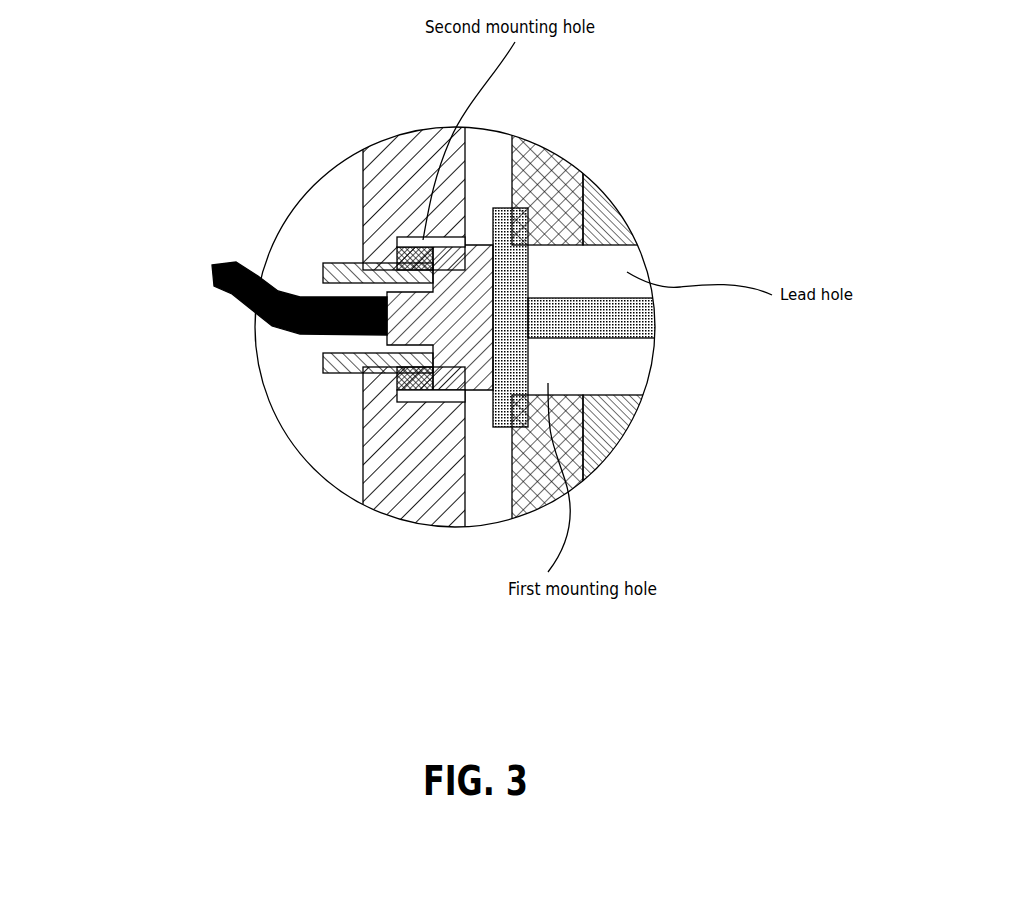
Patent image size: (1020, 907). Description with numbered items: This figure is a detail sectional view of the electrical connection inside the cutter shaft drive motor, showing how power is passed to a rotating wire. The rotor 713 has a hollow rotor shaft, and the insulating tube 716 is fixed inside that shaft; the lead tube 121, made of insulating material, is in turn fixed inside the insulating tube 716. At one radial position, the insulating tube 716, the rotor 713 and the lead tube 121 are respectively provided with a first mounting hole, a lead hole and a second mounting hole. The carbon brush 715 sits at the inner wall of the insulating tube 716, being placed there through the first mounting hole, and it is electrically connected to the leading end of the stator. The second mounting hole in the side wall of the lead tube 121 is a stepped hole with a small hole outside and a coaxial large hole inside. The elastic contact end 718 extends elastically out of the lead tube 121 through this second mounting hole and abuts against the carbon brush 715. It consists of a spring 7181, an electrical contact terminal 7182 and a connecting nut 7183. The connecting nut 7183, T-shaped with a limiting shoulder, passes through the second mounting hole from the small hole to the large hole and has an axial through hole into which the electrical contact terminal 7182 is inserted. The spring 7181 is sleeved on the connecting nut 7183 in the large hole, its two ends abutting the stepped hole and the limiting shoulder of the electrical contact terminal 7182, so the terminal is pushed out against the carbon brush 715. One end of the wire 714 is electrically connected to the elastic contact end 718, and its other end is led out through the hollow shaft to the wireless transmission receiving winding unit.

The lead tube 121 is at (420, 163).
The rotor 713 is at (623, 223).
The wire 714 is at (318, 335).
The carbon brush 715 is at (530, 367).
The insulating tube 716 is at (600, 188).
The elastic contact end 718 is at (341, 385).
The spring 7181 is at (395, 255).
The electrical contact terminal 7182 is at (473, 363).
The connecting nut 7183 is at (353, 373).